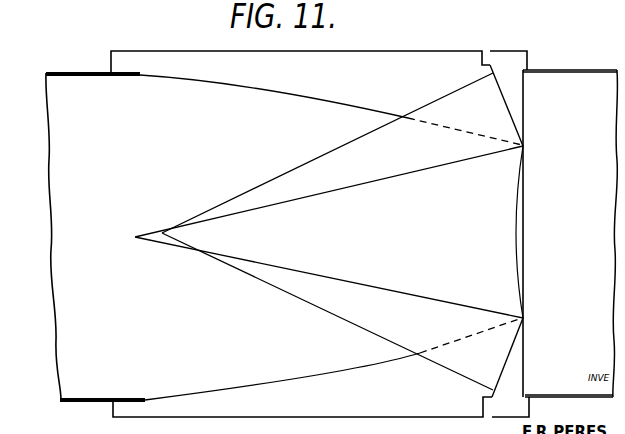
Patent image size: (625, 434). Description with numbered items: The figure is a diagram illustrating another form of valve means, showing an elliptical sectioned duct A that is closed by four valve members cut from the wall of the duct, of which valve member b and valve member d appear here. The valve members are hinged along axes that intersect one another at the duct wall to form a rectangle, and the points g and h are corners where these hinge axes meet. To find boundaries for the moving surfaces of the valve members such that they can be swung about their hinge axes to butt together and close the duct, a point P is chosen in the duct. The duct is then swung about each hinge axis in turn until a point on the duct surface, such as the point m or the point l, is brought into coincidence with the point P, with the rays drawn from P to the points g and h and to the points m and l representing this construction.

The elliptical sectioned duct A is at (88, 72).
The point on the duct surface m is at (147, 78).
The point on the duct surface l is at (148, 397).
The valve member b is at (423, 161).
The valve member d is at (428, 343).
The hinge axis intersection point g is at (525, 146).
The hinge axis intersection point h is at (526, 318).
The chosen point in the duct P is at (129, 270).